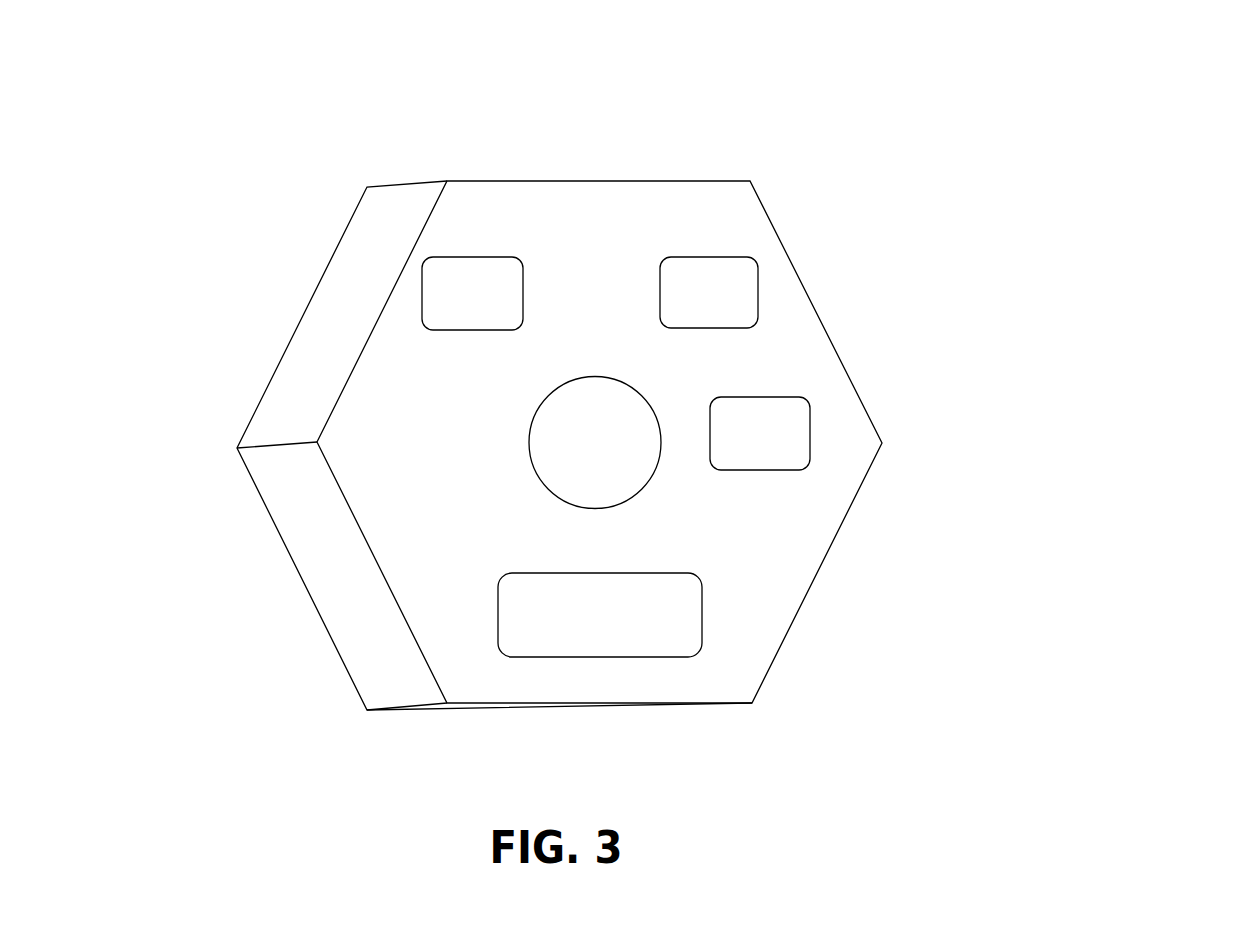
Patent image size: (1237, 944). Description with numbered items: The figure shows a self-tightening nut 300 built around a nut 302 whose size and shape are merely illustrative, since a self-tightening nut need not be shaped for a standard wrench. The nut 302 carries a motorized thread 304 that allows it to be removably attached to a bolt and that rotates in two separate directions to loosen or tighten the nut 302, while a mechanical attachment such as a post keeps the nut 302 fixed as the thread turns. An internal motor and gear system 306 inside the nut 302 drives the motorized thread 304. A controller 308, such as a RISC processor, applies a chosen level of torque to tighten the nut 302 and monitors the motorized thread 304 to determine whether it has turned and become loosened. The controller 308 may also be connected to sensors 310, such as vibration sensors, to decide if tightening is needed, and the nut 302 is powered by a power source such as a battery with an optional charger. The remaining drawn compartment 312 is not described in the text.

The self-tightening nut 300 is at (1057, 73).
The nut 302 is at (448, 182).
The motorized thread 304 is at (528, 427).
The internal motor and gear system 306 is at (700, 253).
The controller 308 is at (423, 260).
The sensors 310 is at (753, 393).
The elongated rectangular port 312 is at (702, 617).